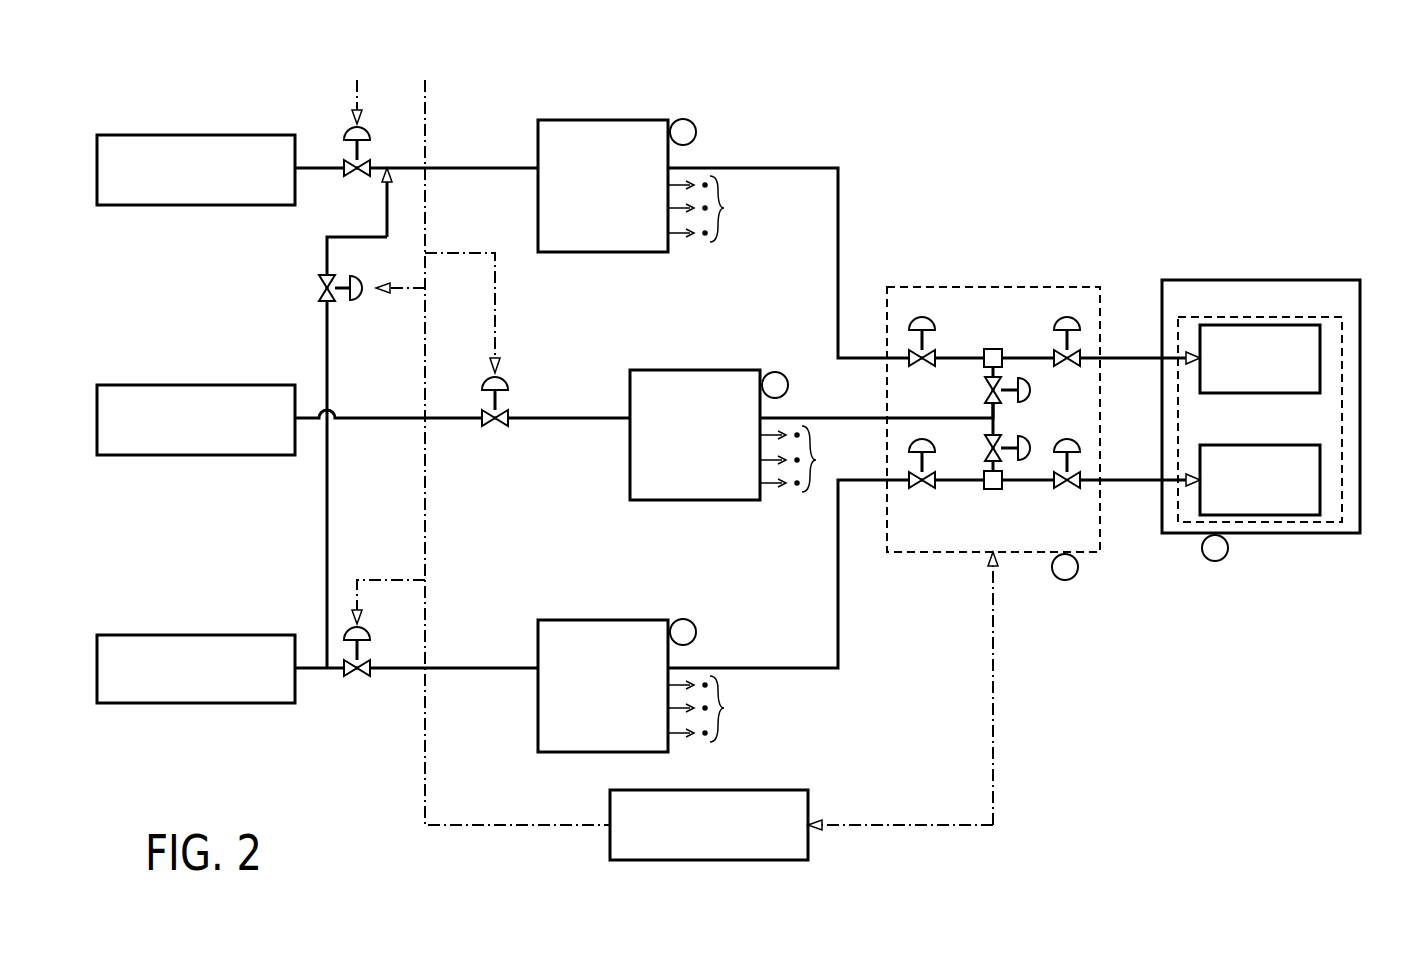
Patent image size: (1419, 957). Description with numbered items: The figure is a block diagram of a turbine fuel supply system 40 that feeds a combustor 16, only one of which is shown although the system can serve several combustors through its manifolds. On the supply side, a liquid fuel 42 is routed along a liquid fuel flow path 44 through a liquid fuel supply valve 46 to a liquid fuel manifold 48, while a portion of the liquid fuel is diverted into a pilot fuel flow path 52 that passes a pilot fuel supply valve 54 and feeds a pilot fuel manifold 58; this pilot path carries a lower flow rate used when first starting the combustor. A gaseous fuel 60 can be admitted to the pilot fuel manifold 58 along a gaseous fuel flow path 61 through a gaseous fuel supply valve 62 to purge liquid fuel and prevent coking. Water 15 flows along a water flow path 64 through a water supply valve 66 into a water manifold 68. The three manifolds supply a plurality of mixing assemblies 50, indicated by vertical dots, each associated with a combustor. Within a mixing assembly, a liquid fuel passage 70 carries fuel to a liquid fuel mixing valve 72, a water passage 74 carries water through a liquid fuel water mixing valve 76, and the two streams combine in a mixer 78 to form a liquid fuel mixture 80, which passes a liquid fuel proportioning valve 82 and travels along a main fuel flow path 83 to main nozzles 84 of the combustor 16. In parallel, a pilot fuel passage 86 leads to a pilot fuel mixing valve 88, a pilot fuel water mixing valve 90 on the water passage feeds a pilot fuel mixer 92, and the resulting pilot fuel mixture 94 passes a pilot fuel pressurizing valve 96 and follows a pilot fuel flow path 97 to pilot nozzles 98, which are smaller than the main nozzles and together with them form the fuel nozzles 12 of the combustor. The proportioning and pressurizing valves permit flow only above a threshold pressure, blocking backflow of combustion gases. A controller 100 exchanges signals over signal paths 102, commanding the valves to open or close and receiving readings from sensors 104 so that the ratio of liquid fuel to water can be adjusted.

The turbine fuel supply system 40 is at (125, 64).
The gaseous fuel 60 is at (196, 135).
The gaseous fuel flow path 61 is at (318, 168).
The gaseous fuel supply valve 62 is at (350, 132).
The pilot fuel manifold 58 is at (607, 120).
The sensors 104 is at (693, 123).
The mixing assemblies 50 is at (925, 596).
The pilot fuel supply valve 54 is at (318, 286).
The water 15 is at (192, 385).
The water flow path 64 is at (380, 418).
The water supply valve 66 is at (490, 425).
The water manifold 68 is at (700, 370).
The pilot fuel flow path 52 is at (327, 537).
The liquid fuel 42 is at (195, 635).
The liquid fuel supply valve 46 is at (352, 676).
The liquid fuel flow path 44 is at (395, 672).
The liquid fuel manifold 48 is at (607, 620).
The controller 100 is at (760, 790).
The signal paths 102 is at (515, 823).
The pilot fuel passage 86 is at (897, 358).
The pilot fuel mixing valve 88 is at (930, 350).
The pilot fuel mixer 92 is at (985, 357).
The pilot fuel mixture 94 is at (1055, 358).
The pilot fuel pressurizing valve 96 is at (1075, 352).
The pilot fuel flow path 97 is at (1135, 358).
The water passage 74 is at (925, 418).
The pilot fuel water mixing valve 90 is at (1040, 383).
The liquid fuel water mixing valve 76 is at (1000, 445).
The liquid fuel passage 70 is at (900, 483).
The liquid fuel mixing valve 72 is at (918, 488).
The mixer 78 is at (987, 490).
The liquid fuel mixture 80 is at (1008, 487).
The liquid fuel proportioning valve 82 is at (1065, 488).
The main fuel flow path 83 is at (1135, 485).
The combustor 16 is at (1262, 280).
The fuel nozzles 12 is at (1342, 420).
The pilot nozzles 98 is at (1260, 393).
The main nozzles 84 is at (1262, 445).